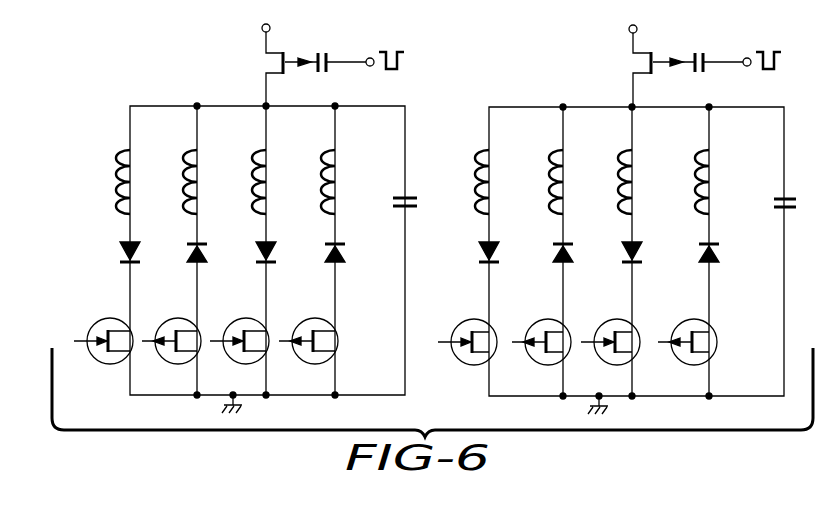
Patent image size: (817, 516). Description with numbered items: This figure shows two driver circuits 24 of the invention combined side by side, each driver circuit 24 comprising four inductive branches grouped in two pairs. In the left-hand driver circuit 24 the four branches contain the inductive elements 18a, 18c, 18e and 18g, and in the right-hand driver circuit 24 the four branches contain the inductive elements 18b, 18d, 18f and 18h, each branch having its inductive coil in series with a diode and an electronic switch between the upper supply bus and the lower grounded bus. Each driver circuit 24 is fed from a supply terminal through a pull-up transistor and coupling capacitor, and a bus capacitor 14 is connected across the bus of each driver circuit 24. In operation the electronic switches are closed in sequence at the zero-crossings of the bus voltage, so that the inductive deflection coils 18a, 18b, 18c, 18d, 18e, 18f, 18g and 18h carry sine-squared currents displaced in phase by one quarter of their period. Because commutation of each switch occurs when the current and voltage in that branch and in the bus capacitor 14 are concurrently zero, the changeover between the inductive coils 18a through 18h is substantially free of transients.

The driver circuit 24 is at (206, 94).
The bus capacitor 14 is at (415, 199).
The inductive element 18a is at (116, 158).
The inductive element 18b is at (476, 164).
The inductive element 18c is at (184, 163).
The inductive element 18d is at (550, 164).
The inductive element 18e is at (253, 163).
The inductive element 18f is at (619, 164).
The inductive element 18g is at (322, 164).
The inductive element 18h is at (696, 164).